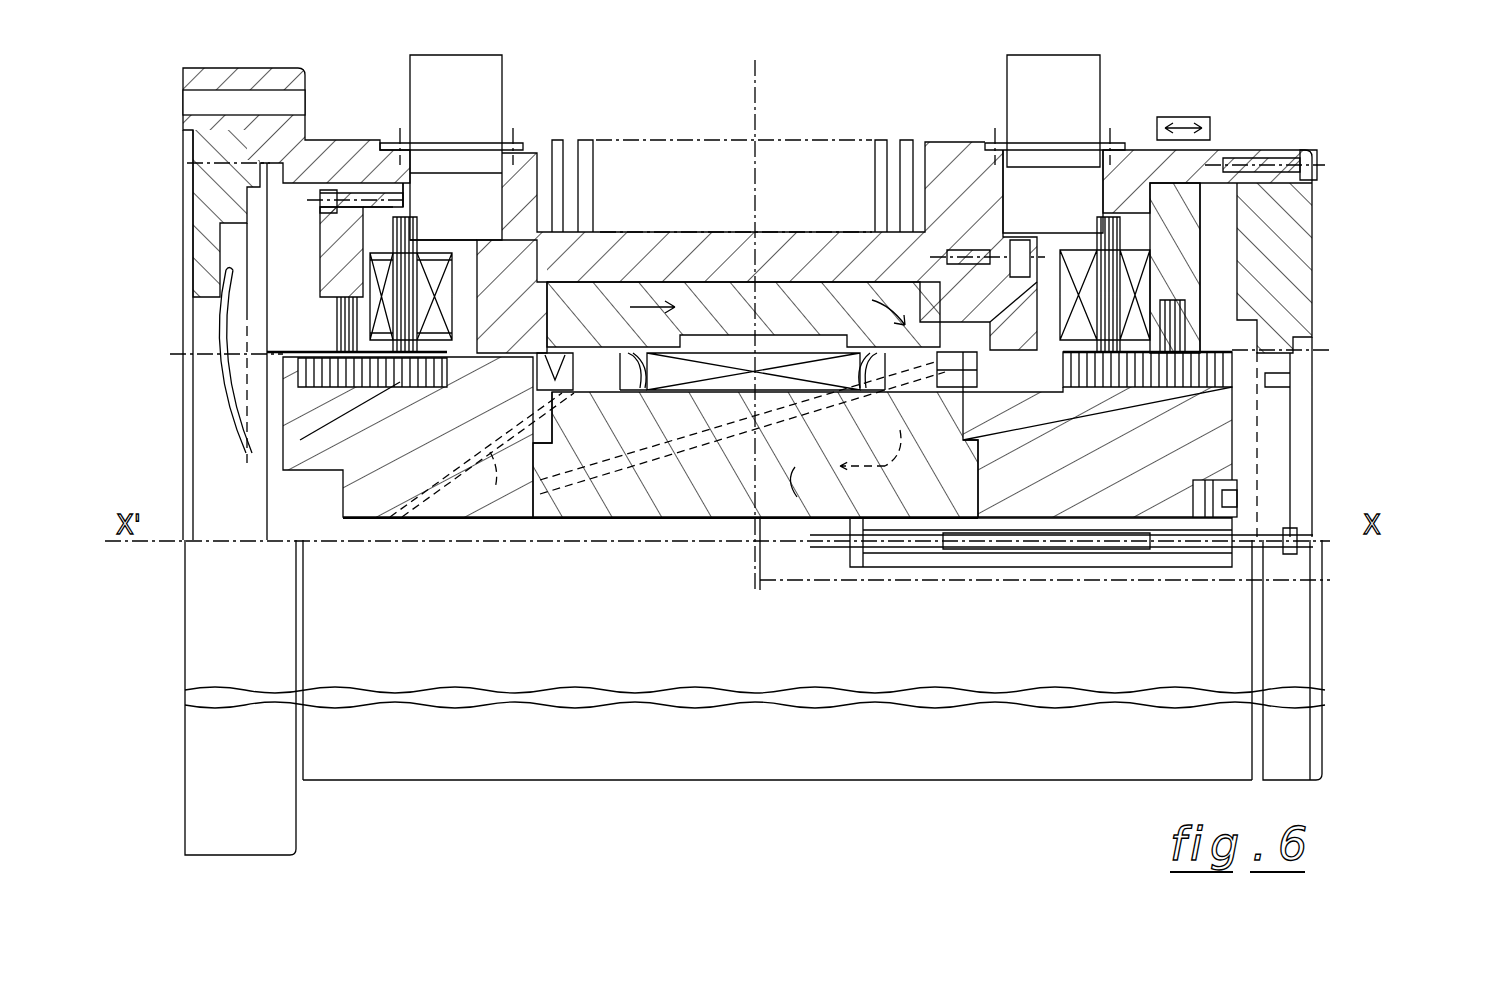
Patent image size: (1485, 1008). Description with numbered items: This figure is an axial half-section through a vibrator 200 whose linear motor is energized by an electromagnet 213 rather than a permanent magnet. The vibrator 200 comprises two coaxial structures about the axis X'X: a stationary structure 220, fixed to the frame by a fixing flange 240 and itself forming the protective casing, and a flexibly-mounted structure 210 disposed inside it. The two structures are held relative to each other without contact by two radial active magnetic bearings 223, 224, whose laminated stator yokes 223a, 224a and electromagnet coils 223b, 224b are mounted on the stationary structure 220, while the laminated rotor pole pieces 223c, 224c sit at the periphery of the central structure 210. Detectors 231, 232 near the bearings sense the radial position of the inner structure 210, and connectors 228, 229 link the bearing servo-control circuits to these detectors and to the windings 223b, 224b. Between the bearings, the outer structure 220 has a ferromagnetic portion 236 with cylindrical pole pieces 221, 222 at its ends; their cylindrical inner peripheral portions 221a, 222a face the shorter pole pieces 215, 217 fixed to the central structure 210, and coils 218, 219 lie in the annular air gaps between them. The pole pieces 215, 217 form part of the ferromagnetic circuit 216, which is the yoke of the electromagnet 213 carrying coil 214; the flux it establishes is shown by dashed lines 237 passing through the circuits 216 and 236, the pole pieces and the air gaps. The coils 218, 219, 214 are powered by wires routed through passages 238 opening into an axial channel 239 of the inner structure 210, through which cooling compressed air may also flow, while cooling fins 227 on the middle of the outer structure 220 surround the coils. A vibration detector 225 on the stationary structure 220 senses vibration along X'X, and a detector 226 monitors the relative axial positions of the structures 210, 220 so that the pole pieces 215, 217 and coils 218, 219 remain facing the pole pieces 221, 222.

The vibrator 200 is at (499, 810).
The flexibly-mounted structure 210 is at (377, 493).
The electromagnet 213 is at (693, 533).
The coil 214 is at (690, 393).
The pole piece 215 is at (592, 370).
The ferromagnetic circuit 216 is at (972, 490).
The pole piece 217 is at (960, 395).
The coil 218 is at (560, 342).
The coil 219 is at (979, 374).
The stationary structure 220 is at (1230, 634).
The pole piece 221 is at (660, 292).
The cylindrical inner peripheral portion 221a is at (575, 300).
The pole piece 222 is at (855, 302).
The cylindrical inner peripheral portion 222a is at (935, 345).
The radial active magnetic bearing 223 is at (435, 404).
The laminated stator yoke 223a is at (415, 221).
The electromagnet coil 223b is at (440, 368).
The laminated rotor pole piece 223c is at (320, 392).
The radial active magnetic bearing 224 is at (1139, 400).
The laminated stator yoke 224a is at (1172, 235).
The electromagnet coil 224b is at (1172, 268).
The laminated rotor pole piece 224c is at (1110, 387).
The vibration detector 225 is at (1172, 118).
The detector 226 is at (1292, 379).
The cooling fins 227 is at (597, 167).
The connector 228 is at (488, 83).
The connector 229 is at (1012, 88).
The detector 231 is at (317, 326).
The detector 232 is at (1199, 313).
The ferromagnetic portion 236 is at (745, 287).
The dashed lines 237 is at (845, 468).
The passages 238 is at (667, 439).
The axial channel 239 is at (437, 520).
The fixing flange 240 is at (305, 833).